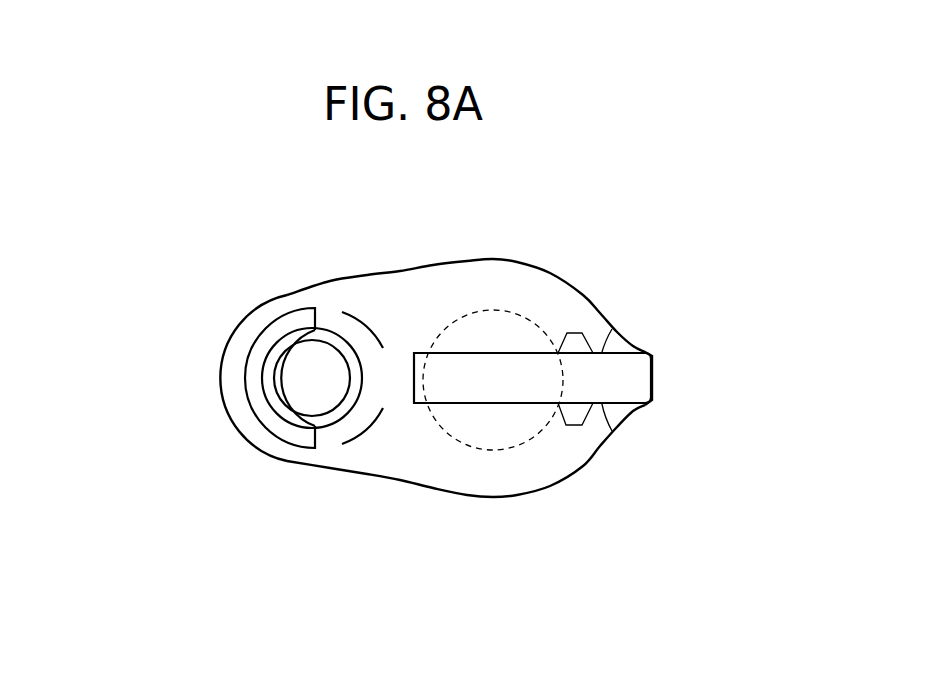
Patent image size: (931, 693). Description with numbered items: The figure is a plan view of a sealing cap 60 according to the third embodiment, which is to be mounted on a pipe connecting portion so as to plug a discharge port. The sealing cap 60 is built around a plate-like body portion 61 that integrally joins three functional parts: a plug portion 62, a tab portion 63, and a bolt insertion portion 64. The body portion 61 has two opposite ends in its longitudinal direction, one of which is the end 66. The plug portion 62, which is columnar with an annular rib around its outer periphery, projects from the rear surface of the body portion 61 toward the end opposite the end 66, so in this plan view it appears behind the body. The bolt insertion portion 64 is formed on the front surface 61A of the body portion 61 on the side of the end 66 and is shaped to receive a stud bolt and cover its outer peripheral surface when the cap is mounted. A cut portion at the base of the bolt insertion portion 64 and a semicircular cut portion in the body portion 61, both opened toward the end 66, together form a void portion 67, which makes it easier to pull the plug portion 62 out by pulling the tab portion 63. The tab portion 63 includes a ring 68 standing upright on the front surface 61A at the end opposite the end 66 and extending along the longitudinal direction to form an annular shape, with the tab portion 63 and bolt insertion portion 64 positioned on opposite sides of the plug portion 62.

The sealing cap 60 is at (610, 258).
The plate-like body portion 61 is at (399, 271).
The front surface 61A is at (463, 475).
The plug portion 62 is at (537, 432).
The tab portion 63 is at (507, 355).
The bolt insertion portion 64 is at (278, 342).
The end 66 is at (221, 378).
The void portion 67 is at (277, 420).
The ring 68 is at (492, 378).